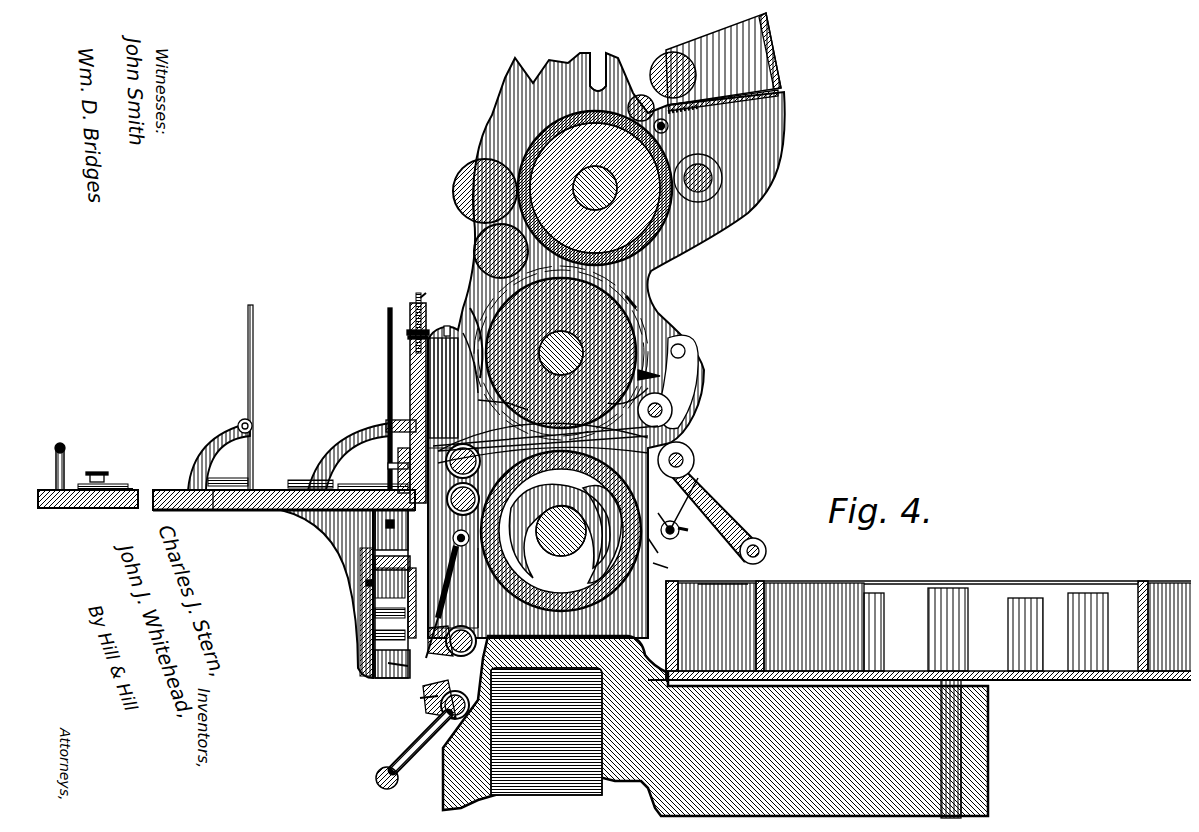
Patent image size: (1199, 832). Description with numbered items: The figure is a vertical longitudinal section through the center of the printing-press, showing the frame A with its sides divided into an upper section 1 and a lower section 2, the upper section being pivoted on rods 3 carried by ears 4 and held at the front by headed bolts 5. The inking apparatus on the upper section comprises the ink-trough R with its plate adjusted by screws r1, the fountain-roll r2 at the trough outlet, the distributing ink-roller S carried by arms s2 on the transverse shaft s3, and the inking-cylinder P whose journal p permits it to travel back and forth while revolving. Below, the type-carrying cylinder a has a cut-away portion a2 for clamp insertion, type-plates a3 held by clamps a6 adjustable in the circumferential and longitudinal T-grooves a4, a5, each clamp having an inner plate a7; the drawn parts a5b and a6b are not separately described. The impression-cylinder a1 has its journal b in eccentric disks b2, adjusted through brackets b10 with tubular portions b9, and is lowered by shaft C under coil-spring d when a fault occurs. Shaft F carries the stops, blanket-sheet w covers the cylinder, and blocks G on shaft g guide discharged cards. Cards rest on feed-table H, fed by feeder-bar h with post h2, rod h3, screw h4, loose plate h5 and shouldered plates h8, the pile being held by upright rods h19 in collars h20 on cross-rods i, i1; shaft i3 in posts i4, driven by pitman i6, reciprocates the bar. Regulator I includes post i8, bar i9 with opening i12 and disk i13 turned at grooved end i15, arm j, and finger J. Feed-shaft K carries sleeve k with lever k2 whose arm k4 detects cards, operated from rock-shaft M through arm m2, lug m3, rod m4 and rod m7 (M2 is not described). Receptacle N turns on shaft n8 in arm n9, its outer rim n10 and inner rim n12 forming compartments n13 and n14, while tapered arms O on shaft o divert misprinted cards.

The upper frame section 1 is at (606, 345).
The lower frame section 2 is at (438, 320).
The pivot rod 3 is at (678, 343).
The ear 4 is at (660, 352).
The headed bolt 5 is at (590, 75).
The ink-trough R is at (723, 62).
The adjusting screw r1 is at (675, 130).
The fountain-roll r2 is at (666, 68).
The distributing ink-roller S is at (633, 88).
The arm s2 is at (667, 126).
The transverse shaft s3 is at (666, 122).
The inking-cylinder P is at (565, 82).
The journal p is at (570, 170).
The type-carrying cylinder a is at (632, 318).
The impression-cylinder a1 is at (435, 700).
The cut-away portion a2 is at (630, 372).
The type-plate a3 is at (490, 400).
The circumferential T-groove a4 is at (478, 312).
The longitudinal T-groove a5 is at (622, 293).
The lever rod a5b is at (420, 668).
The clamp a6 is at (462, 330).
The lever rod a6b is at (420, 650).
The inner clamp plate a7 is at (380, 655).
The frame A is at (457, 527).
The journal b is at (561, 531).
The disk b2 is at (430, 680).
The tubular portion b9 is at (445, 530).
The bracket b10 is at (404, 607).
The shaft C is at (413, 750).
The coil-spring d is at (410, 692).
The shaft F is at (660, 565).
The block G is at (678, 508).
The shaft g is at (684, 511).
The covering or blanket-sheet w is at (652, 538).
The feed-table H is at (284, 513).
The feeder-bar h is at (88, 486).
The threaded lug or post h2 is at (110, 476).
The rod h3 is at (160, 480).
The screw h4 is at (90, 462).
The plate h5 is at (207, 502).
The shouldered plate h8 is at (255, 478).
The upright rod h19 is at (380, 360).
The collar h20 is at (235, 412).
The regulator I is at (401, 416).
The cross-rod i is at (72, 474).
The cross-rod i1 is at (372, 476).
The shaft i3 is at (54, 436).
The post i4 is at (360, 575).
The pitman i6 is at (378, 520).
The post i8 is at (400, 375).
The vertically-adjustable bar i9 is at (408, 295).
The opening i12 is at (400, 323).
The horizontal disk or wheel i13 is at (400, 330).
The grooved end i15 is at (433, 281).
The finger J is at (392, 470).
The arm j is at (393, 457).
The feed-shaft K is at (449, 388).
The sleeve k is at (391, 594).
The lever k2 is at (380, 575).
The upper short arm k4 is at (372, 545).
The rock-shaft M is at (495, 588).
The base block M2 is at (715, 726).
The arm m2 is at (385, 660).
The lug m3 is at (370, 608).
The rod or pitman m4 is at (372, 630).
The second rod or pitman m7 is at (392, 569).
The receptacle N is at (919, 618).
The central depending shaft n8 is at (955, 778).
The arm n9 is at (982, 712).
The outer rim n10 is at (700, 576).
The inner circular rim n12 is at (795, 576).
The compartment n13 is at (752, 576).
The compartment n14 is at (900, 580).
The tapered arm O is at (720, 530).
The shaft o is at (745, 530).